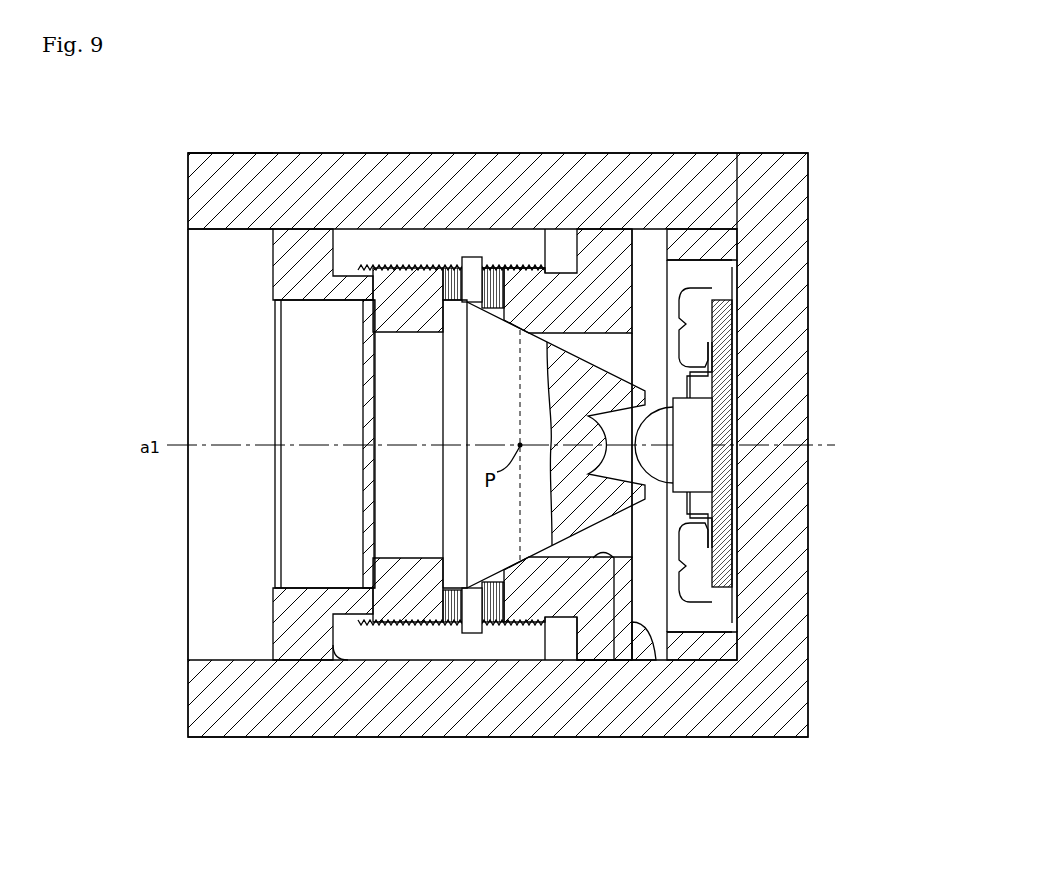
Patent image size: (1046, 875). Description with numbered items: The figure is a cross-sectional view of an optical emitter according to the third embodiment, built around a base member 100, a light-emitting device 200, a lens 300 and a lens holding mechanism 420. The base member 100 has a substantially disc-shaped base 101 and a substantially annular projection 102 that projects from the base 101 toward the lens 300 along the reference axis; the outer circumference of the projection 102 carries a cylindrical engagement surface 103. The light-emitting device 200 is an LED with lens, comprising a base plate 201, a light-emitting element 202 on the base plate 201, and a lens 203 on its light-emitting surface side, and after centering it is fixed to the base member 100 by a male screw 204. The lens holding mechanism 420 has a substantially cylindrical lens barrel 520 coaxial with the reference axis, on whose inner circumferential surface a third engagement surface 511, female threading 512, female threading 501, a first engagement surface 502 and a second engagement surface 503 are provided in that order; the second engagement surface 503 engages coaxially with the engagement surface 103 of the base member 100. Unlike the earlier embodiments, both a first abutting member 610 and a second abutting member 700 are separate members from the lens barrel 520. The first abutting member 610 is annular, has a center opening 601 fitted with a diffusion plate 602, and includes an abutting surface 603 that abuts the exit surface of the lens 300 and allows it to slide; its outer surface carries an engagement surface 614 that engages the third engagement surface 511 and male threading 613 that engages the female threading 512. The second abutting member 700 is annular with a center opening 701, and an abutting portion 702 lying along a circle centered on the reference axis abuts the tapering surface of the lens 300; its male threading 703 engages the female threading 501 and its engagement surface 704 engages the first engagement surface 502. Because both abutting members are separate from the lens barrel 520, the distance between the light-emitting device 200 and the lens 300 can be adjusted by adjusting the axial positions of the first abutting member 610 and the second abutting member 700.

The base member 100 is at (852, 327).
The base 101 is at (772, 188).
The projection 102 is at (700, 262).
The engagement surface 103 is at (730, 224).
The light-emitting device 200 is at (890, 358).
The base plate 201 is at (735, 372).
The light-emitting element 202 is at (692, 421).
The lens 203 is at (653, 462).
The male screw 204 is at (697, 573).
The lens 300 is at (495, 384).
The lens holding mechanism 420 is at (158, 344).
The female threading 501 is at (515, 266).
The first engagement surface 502 is at (604, 240).
The second engagement surface 503 is at (698, 250).
The third engagement surface 511 is at (257, 230).
The female threading 512 is at (405, 268).
The lens barrel 520 is at (275, 152).
The opening 601 is at (388, 558).
The diffusion plate 602 is at (365, 495).
The abutting surface 603 is at (457, 627).
The first abutting member 610 is at (313, 640).
The male threading 613 is at (400, 625).
The engagement surface 614 is at (290, 660).
The second abutting member 700 is at (655, 660).
The opening 701 is at (614, 660).
The abutting portion 702 is at (488, 625).
The male threading 703 is at (519, 610).
The engagement surface 704 is at (597, 630).